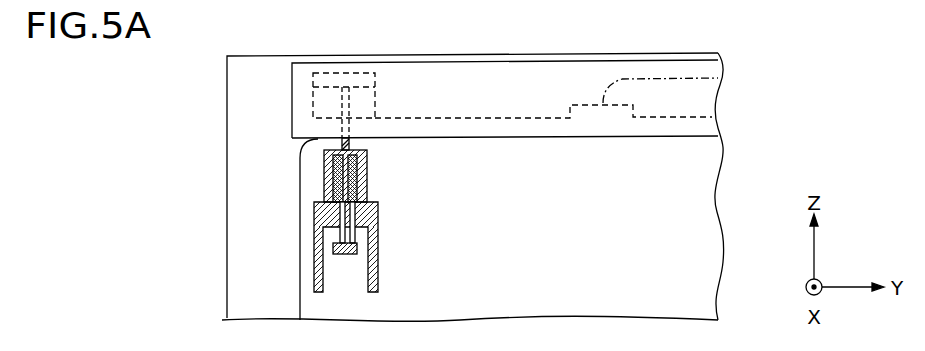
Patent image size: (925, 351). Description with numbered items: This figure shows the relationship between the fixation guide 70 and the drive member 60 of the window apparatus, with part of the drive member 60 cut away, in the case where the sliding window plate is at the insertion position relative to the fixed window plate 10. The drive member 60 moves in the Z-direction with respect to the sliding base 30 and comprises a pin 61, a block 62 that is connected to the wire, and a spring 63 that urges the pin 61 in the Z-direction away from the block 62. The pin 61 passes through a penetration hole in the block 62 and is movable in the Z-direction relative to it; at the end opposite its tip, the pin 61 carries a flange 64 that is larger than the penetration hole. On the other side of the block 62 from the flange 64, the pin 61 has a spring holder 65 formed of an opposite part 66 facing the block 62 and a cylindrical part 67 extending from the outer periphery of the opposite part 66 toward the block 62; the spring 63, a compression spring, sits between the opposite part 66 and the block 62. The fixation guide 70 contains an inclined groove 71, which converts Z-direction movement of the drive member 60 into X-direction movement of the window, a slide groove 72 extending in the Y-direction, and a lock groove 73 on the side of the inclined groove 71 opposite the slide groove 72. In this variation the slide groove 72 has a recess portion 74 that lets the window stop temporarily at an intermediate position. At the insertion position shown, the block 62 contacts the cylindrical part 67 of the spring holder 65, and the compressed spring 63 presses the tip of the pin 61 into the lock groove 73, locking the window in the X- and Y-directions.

The fixed window plate 10 is at (701, 53).
The sliding base 30 is at (708, 221).
The drive member 60 is at (153, 200).
The pin 61 is at (341, 256).
The block 62 is at (336, 206).
The spring 63 is at (324, 190).
The flange 64 is at (353, 254).
The spring holder 65 is at (153, 138).
The opposite part 66 is at (330, 151).
The cylindrical part 67 is at (333, 176).
The fixation guide 70 is at (708, 103).
The inclined groove 71 is at (313, 102).
The slide groove 72 is at (313, 132).
The lock groove 73 is at (313, 76).
The recess portion 74 is at (718, 78).